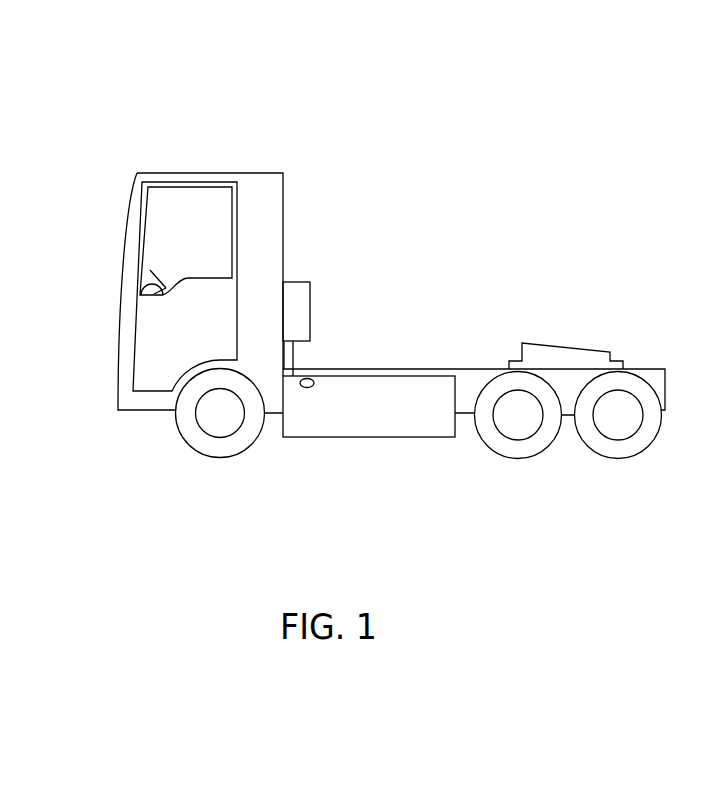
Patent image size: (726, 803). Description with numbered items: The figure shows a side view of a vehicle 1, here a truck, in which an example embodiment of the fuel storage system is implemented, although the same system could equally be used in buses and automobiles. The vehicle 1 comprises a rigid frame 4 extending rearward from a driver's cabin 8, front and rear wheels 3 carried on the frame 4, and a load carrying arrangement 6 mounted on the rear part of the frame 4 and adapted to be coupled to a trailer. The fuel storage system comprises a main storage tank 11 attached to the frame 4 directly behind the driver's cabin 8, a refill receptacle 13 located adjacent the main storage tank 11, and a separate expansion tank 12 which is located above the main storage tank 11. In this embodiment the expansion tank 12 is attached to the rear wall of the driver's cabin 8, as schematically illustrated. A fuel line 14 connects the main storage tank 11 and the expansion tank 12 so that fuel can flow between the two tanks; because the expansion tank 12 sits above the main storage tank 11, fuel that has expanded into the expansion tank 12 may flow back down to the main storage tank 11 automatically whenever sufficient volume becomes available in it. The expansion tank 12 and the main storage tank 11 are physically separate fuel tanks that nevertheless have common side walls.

The vehicle 1 is at (395, 330).
The front and rear wheels 3 is at (212, 447).
The rigid frame 4 is at (470, 388).
The load carrying arrangement 6 is at (568, 357).
The driver's cabin 8 is at (290, 163).
The main storage tank 11 is at (438, 403).
The expansion tank 12 is at (295, 312).
The refill receptacle 13 is at (307, 388).
The fuel line 14 is at (295, 355).